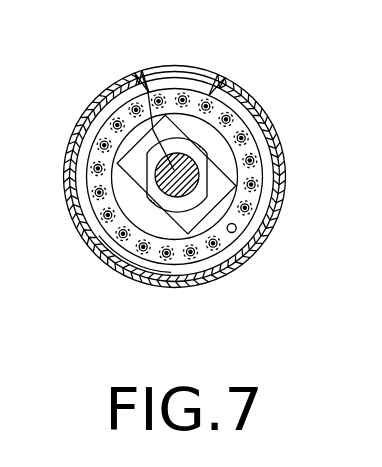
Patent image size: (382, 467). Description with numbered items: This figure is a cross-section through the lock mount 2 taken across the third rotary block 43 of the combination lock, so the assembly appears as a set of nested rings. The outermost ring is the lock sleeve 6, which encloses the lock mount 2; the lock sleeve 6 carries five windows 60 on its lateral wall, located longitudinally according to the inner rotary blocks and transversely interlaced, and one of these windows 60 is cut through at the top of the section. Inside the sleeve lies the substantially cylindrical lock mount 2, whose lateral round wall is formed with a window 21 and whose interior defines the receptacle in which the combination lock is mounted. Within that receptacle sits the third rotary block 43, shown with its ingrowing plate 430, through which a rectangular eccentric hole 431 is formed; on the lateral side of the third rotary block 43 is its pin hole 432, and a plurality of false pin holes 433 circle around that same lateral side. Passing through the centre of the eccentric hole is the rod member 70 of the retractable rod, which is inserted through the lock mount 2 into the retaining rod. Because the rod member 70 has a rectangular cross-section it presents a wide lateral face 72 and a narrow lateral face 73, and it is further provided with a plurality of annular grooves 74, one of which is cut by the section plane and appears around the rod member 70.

The lock mount 2 is at (98, 234).
The lock sleeve 6 is at (117, 264).
The window 21 is at (190, 85).
The third rotary block 43 is at (217, 246).
The windows 60 is at (170, 72).
The rod member 70 is at (132, 85).
The wide lateral face 72 is at (267, 133).
The narrow lateral face 73 is at (85, 146).
The annular grooves 74 is at (103, 115).
The ingrowing plate 430 is at (213, 142).
The rectangular eccentric hole 431 is at (236, 186).
The pin hole 432 is at (238, 233).
The false pin holes 433 is at (193, 256).